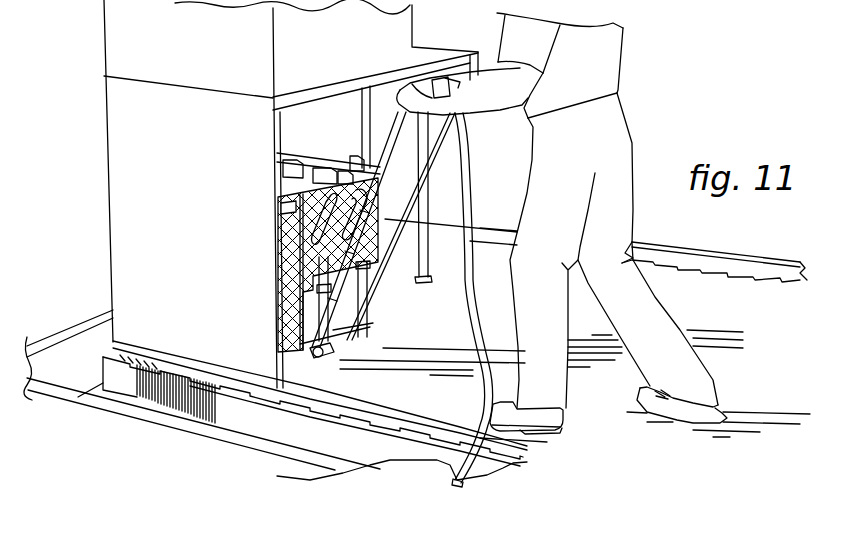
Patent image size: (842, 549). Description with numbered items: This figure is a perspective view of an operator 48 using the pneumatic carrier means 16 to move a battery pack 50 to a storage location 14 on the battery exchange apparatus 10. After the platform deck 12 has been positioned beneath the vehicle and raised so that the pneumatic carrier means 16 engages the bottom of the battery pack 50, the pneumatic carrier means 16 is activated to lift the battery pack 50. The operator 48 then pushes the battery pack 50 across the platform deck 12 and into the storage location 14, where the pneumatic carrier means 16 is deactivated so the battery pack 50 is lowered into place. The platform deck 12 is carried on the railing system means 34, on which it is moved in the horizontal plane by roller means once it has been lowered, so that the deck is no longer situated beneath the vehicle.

The apparatus 10 is at (506, 246).
The platform deck 12 is at (733, 300).
The storage location 14 is at (295, 127).
The pneumatic carrier means 16 is at (437, 82).
The railing system means 34 is at (77, 320).
The operator 48 is at (605, 73).
The battery pack 50 is at (298, 242).